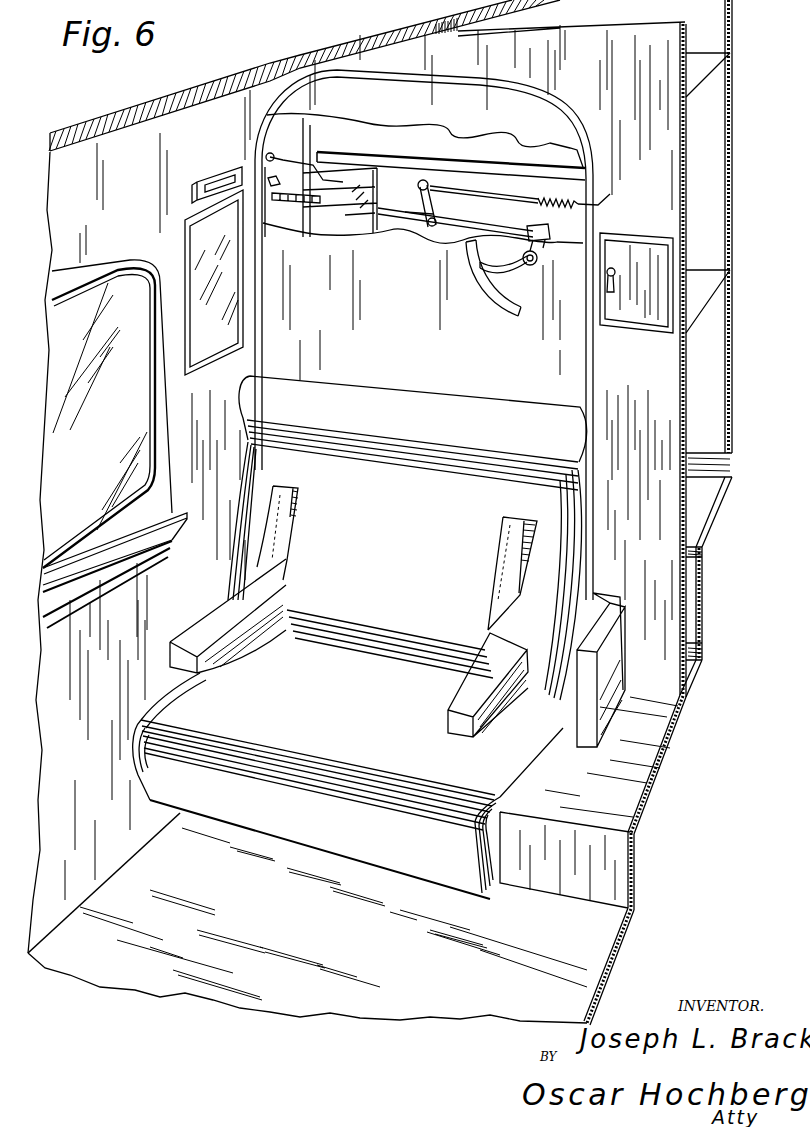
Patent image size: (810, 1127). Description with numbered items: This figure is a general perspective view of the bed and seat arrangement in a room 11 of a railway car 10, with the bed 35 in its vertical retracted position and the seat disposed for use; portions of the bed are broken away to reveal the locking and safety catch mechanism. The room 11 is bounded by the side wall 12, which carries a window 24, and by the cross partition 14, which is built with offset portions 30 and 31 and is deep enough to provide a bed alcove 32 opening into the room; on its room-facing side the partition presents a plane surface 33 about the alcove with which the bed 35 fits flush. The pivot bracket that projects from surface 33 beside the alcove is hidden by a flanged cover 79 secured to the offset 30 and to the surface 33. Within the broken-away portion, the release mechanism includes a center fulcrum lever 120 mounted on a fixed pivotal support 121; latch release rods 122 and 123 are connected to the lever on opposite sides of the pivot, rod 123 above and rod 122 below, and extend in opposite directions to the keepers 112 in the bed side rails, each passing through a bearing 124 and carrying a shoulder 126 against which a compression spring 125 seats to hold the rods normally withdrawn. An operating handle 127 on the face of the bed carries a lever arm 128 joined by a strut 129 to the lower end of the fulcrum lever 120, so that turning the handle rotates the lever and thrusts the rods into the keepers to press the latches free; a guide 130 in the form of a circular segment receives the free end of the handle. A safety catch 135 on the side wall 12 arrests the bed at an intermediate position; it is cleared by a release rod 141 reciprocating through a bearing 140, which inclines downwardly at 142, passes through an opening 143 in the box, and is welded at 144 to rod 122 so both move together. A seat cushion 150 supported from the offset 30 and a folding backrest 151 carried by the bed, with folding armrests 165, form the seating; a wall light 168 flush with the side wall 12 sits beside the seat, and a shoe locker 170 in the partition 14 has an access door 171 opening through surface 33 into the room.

The railway car 10 is at (147, 97).
The room 11 is at (122, 957).
The side wall 12 is at (58, 768).
The cross partition 14 is at (734, 136).
The window 24 is at (115, 444).
The offset portion 30 is at (589, 802).
The offset portion 31 is at (708, 559).
The bed alcove 32 is at (592, 366).
The plane surface 33 is at (498, 359).
The bed 35 is at (421, 315).
The flanged cover 79 is at (603, 668).
The keeper 112 is at (270, 183).
The center fulcrum lever 120 is at (438, 216).
The pivotal support 121 is at (438, 214).
The latch release rod 122 is at (418, 198).
The latch release rod 123 is at (484, 198).
The bearing 124 is at (603, 198).
The compression spring 125 is at (296, 242).
The shoulder 126 is at (312, 241).
The operating handle 127 is at (530, 272).
The lever arm 128 is at (548, 223).
The strut 129 is at (457, 218).
The guide 130 is at (477, 302).
The safety catch 135 is at (209, 185).
The bearing 140 is at (305, 116).
The release rod 141 is at (360, 241).
The inclined portion 142 is at (380, 150).
The opening 143 is at (451, 160).
The welded connection 144 is at (348, 158).
The seat cushion 150 is at (348, 786).
The backrest 151 is at (407, 538).
The folding armrest 165 is at (236, 661).
The wall light 168 is at (214, 282).
The shoe locker 170 is at (708, 193).
The access door 171 is at (636, 283).